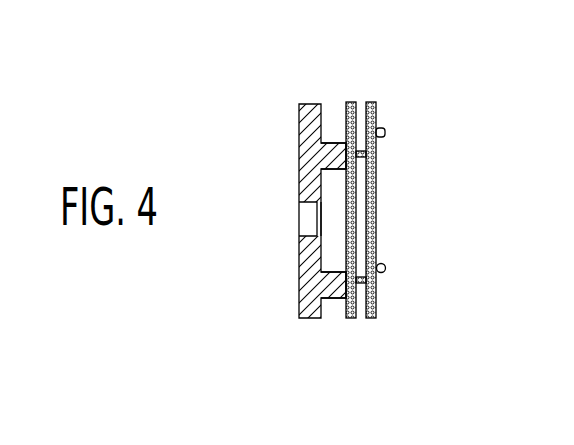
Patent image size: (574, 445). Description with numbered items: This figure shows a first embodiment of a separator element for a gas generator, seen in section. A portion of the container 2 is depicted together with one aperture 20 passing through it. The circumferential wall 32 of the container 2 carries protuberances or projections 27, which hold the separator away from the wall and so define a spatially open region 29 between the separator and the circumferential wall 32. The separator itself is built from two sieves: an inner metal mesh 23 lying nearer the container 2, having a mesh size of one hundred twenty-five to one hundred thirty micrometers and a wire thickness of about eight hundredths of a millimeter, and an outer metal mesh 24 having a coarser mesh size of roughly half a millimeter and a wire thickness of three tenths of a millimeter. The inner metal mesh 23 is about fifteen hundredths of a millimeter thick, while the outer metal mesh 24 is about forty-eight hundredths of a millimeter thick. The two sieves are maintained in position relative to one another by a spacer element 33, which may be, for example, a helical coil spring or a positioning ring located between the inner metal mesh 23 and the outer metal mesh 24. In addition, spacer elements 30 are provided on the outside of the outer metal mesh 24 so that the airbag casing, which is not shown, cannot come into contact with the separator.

The container 2 is at (304, 311).
The aperture 20 is at (310, 217).
The circumferential wall 32 is at (331, 117).
The protuberance 27 is at (335, 300).
The inner metal mesh 23 is at (353, 102).
The outer metal mesh 24 is at (376, 117).
The spacer element 33 is at (376, 153).
The spacer element 30 is at (386, 263).
The spatially open region 29 is at (377, 297).